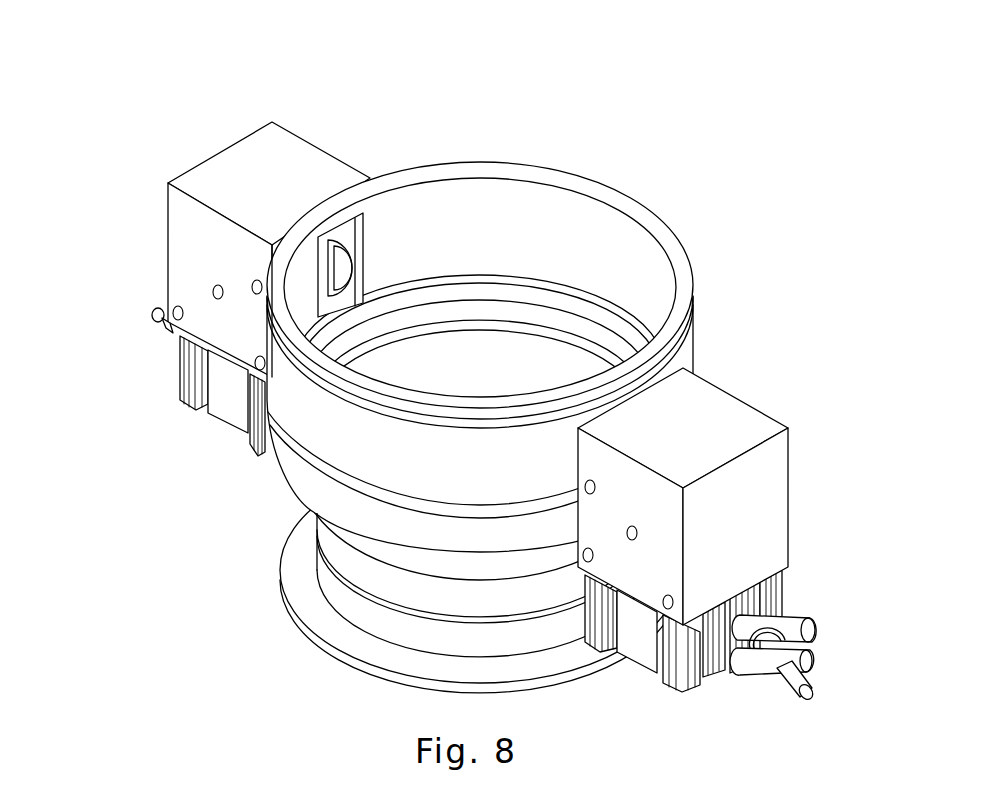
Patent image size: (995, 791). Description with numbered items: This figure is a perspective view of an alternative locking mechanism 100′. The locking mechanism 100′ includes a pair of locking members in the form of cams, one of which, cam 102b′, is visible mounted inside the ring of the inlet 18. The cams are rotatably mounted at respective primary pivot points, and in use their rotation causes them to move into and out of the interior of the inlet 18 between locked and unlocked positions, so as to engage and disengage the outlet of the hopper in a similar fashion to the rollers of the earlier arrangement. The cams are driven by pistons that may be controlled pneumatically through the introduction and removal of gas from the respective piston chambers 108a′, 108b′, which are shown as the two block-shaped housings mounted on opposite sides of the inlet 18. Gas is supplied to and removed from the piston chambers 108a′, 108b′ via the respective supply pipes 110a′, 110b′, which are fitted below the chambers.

The inlet 18 is at (655, 215).
The locking mechanism 100′ is at (745, 330).
The cam 102b′ is at (383, 257).
The piston chamber 108a′ is at (767, 530).
The piston chamber 108b′ is at (251, 153).
The supply pipe 110a′ is at (796, 697).
The supply pipe 110b′ is at (160, 323).